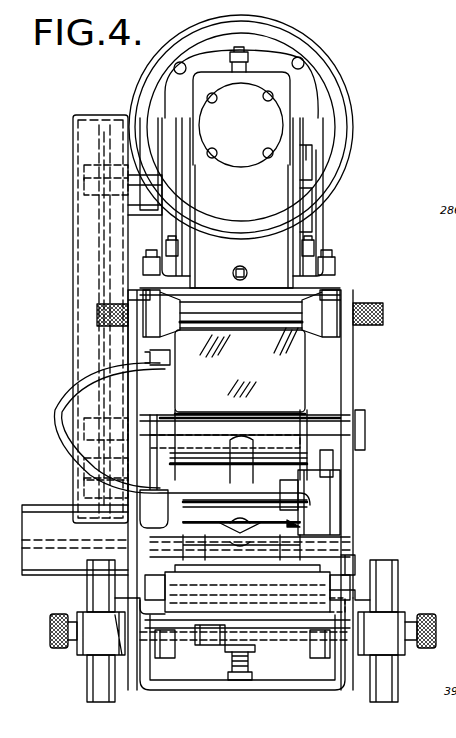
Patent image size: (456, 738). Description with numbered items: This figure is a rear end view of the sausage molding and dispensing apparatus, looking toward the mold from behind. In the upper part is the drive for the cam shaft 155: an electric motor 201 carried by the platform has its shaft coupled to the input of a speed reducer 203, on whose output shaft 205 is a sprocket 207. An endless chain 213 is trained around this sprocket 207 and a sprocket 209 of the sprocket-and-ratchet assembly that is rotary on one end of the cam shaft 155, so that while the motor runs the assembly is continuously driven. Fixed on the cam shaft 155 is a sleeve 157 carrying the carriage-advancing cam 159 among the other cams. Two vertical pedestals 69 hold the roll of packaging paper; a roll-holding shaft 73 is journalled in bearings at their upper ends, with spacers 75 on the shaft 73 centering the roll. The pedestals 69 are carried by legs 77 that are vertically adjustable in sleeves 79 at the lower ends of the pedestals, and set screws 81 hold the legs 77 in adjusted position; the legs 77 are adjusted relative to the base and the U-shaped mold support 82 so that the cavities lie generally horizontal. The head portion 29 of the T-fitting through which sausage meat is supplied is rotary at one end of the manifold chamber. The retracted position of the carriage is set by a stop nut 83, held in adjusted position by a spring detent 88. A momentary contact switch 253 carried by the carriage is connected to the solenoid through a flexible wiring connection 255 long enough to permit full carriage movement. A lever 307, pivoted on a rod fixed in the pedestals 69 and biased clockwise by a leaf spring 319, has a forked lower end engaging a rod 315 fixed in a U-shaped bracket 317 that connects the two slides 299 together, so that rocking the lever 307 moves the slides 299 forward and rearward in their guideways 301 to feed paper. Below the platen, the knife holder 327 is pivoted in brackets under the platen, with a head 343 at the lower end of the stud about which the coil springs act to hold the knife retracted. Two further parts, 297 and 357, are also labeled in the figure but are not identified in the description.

The electric motor 201 is at (331, 60).
The speed reducer 203 is at (250, 197).
The output shaft 205 is at (152, 200).
The sprocket 207 is at (100, 168).
The endless chain 213 is at (97, 238).
The vertical pedestals 69 is at (140, 520).
The roll-holding shaft 73 is at (233, 333).
The spacers 75 is at (304, 306).
The sleeve 157 is at (262, 425).
The cam shaft 155 is at (365, 437).
The flexible wiring connection 255 is at (60, 393).
The sprocket 209 is at (88, 484).
The carriage-advancing cam 159 is at (240, 485).
The head portion 29 is at (42, 580).
The leaf spring 319 is at (154, 472).
The momentary contact switch 253 is at (336, 474).
The lever 307 is at (304, 510).
The nut 83 is at (235, 516).
The spring detent 88 is at (290, 524).
The rod 315 is at (340, 565).
The lower carriage 297 is at (262, 612).
The U-shaped mold support 82 is at (240, 690).
The knife holder 327 is at (168, 658).
The adjusting block 357 is at (222, 645).
The head 343 is at (252, 675).
The slide 299 is at (145, 592).
The guideways 301 is at (128, 612).
The sleeves 79 is at (83, 614).
The set screws 81 is at (50, 630).
The legs 77 is at (93, 685).
The U-shaped bracket 317 is at (330, 606).